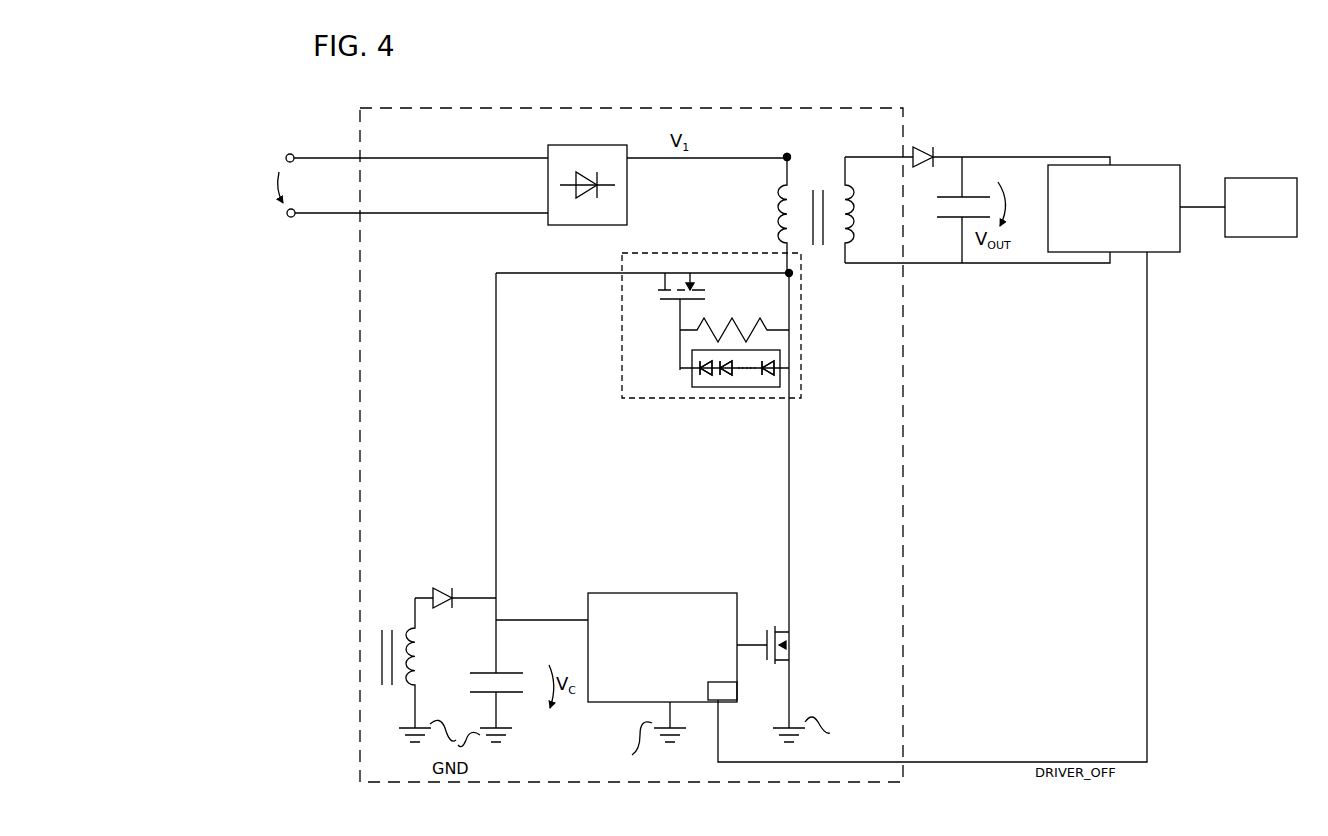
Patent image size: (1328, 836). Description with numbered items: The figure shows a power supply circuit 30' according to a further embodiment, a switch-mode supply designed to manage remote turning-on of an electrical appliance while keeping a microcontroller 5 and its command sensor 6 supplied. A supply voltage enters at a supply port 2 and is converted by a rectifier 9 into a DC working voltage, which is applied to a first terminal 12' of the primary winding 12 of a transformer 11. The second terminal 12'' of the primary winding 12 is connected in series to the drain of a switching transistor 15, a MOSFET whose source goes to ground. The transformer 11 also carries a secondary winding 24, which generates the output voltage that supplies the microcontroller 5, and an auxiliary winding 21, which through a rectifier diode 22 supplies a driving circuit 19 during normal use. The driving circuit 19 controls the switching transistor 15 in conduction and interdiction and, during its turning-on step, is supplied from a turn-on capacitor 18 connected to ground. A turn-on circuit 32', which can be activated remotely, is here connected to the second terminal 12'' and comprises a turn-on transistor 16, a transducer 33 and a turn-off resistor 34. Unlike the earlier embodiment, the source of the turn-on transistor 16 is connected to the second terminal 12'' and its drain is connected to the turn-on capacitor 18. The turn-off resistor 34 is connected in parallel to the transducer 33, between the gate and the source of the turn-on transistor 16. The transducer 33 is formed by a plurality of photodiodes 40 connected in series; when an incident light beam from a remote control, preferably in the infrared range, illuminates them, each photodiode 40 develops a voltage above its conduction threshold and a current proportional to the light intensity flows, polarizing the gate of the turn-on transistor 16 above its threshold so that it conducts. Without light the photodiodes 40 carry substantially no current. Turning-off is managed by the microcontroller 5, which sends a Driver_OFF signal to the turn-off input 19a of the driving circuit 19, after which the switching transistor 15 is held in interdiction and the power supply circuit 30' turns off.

The supply port 2 is at (318, 167).
The rectifier 9 is at (580, 146).
The power supply circuit 30' is at (641, 409).
The first terminal 12' is at (757, 142).
The primary winding 12 is at (751, 215).
The transformer 11 is at (822, 176).
The secondary winding 24 is at (848, 207).
The microcontroller 5 is at (1156, 165).
The command sensor 6 is at (1266, 181).
The turn-on circuit 32' is at (756, 326).
The second terminal 12'' is at (693, 282).
The turn-on transistor 16 is at (658, 278).
The turn-off resistor 34 is at (770, 321).
The transducer 33 is at (694, 383).
The photodiode 40 is at (765, 377).
The turn-on capacitor 18 is at (514, 672).
The rectifier diode 22 is at (440, 590).
The auxiliary winding 21 is at (420, 630).
The driving circuit 19 is at (605, 690).
The turn-off input 19a is at (737, 690).
The switching transistor 15 is at (793, 633).